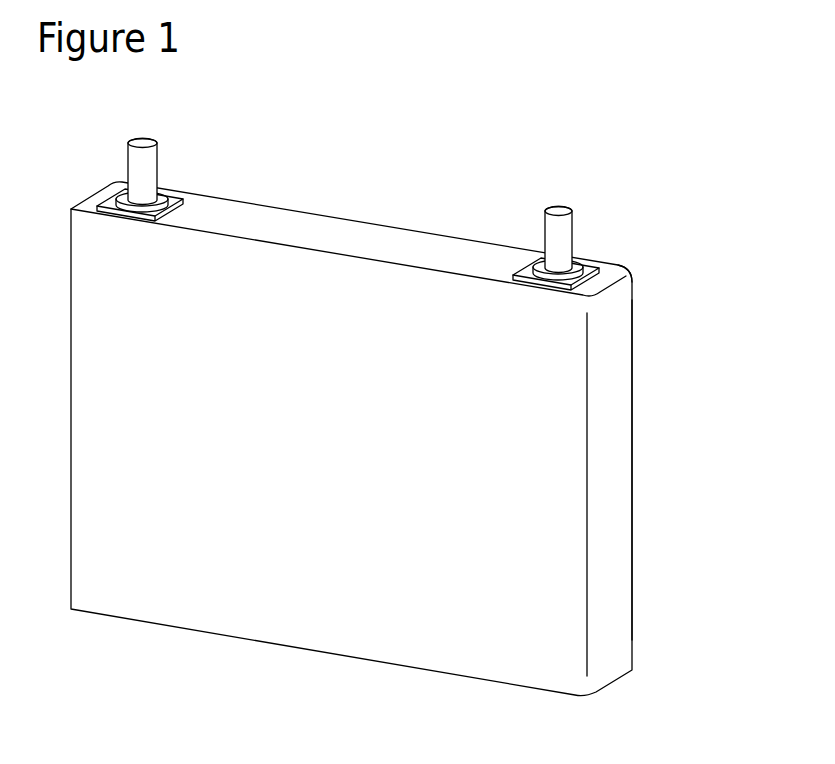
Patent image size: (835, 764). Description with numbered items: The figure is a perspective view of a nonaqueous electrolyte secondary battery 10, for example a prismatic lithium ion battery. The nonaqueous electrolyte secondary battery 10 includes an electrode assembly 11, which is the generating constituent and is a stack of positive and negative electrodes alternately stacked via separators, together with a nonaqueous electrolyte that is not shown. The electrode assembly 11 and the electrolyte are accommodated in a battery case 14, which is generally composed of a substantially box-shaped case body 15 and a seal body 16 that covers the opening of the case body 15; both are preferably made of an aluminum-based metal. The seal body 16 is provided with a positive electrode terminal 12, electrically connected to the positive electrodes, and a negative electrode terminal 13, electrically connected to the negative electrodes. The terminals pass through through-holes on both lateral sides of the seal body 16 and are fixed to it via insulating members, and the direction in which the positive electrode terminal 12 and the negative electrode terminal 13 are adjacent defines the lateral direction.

The nonaqueous electrolyte secondary battery 10 is at (424, 378).
The electrode assembly 11 is at (420, 439).
The positive electrode terminal 12 is at (147, 140).
The negative electrode terminal 13 is at (598, 220).
The battery case 14 is at (678, 470).
The case body 15 is at (617, 407).
The seal body 16 is at (631, 273).